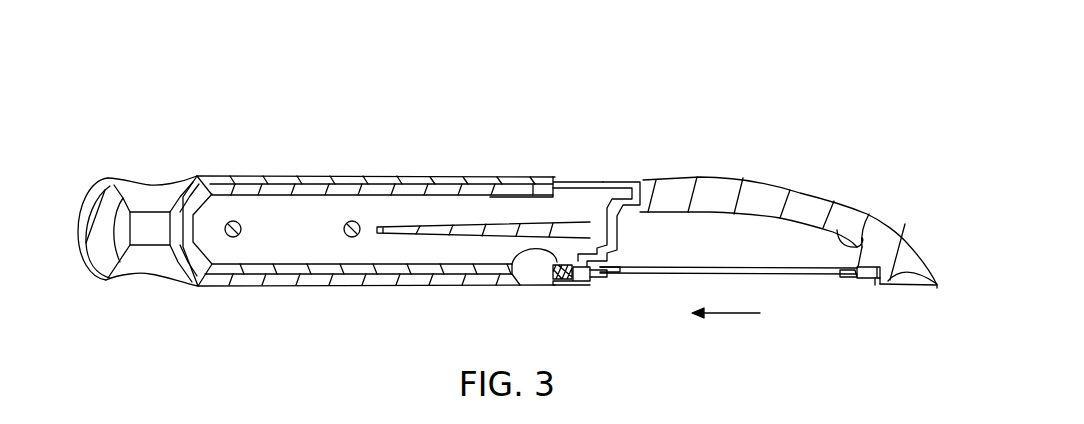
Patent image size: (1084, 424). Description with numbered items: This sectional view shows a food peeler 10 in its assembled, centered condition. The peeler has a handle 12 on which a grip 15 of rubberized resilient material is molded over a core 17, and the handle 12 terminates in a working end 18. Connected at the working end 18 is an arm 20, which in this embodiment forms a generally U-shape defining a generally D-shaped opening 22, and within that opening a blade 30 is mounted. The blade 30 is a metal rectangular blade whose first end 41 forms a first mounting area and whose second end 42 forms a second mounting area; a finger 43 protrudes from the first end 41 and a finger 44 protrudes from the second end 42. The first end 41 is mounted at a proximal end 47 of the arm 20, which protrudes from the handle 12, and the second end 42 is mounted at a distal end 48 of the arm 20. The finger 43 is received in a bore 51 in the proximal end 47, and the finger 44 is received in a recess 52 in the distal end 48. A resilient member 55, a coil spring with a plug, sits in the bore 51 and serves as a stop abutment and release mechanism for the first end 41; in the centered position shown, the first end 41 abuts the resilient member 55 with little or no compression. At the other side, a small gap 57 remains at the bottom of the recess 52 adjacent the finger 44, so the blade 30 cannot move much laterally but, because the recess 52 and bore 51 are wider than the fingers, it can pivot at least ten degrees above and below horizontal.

The food peeler 10 is at (748, 148).
The handle 12 is at (281, 173).
The grip 15 is at (328, 281).
The core 17 is at (270, 263).
The working end 18 is at (560, 178).
The arm 20 is at (674, 181).
The D-shaped opening 22 is at (848, 197).
The blade 30 is at (650, 272).
The first end 41 is at (603, 273).
The second end 42 is at (846, 278).
The finger 43 is at (578, 280).
The finger 44 is at (866, 281).
The proximal end 47 is at (596, 215).
The distal end 48 is at (895, 227).
The bore 51 is at (520, 260).
The recess 52 is at (866, 266).
The resilient member 55 is at (550, 270).
The gap 57 is at (893, 281).